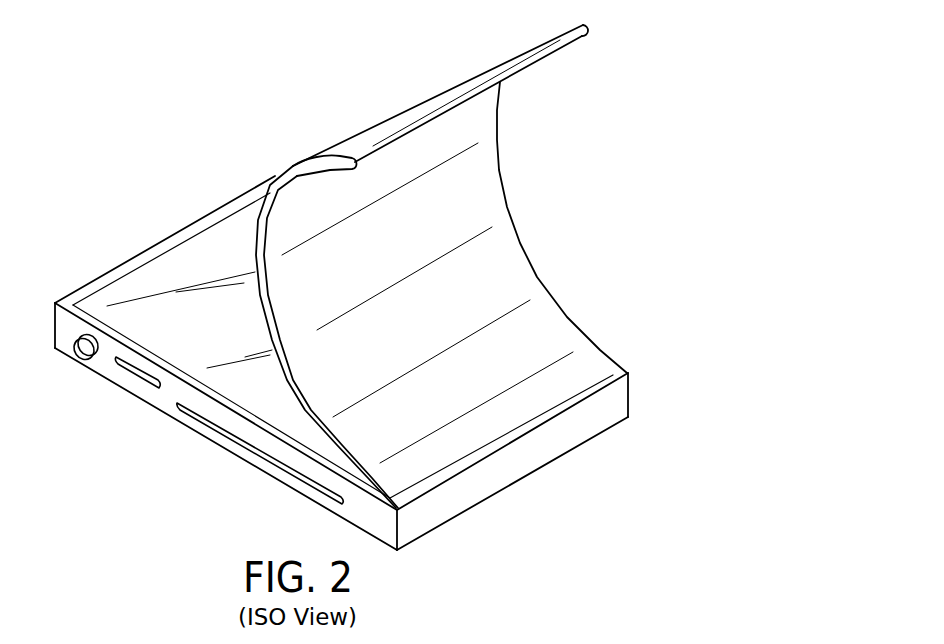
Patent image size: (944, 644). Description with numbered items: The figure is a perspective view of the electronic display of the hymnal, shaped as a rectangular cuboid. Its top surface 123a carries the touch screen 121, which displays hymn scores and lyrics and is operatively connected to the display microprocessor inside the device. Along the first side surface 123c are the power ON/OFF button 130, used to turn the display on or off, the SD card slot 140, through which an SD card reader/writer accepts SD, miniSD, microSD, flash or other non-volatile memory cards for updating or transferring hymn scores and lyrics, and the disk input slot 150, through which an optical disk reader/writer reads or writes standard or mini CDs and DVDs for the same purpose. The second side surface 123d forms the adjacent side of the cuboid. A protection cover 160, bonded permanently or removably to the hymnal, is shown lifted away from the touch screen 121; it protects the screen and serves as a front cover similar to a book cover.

The touch screen 121 is at (215, 247).
The top surface 123a is at (140, 258).
The first side surface 123c is at (370, 515).
The second side surface 123d is at (522, 467).
The power ON/OFF button 130 is at (77, 358).
The SD card slot 140 is at (128, 370).
The disk input slot 150 is at (200, 420).
The protection cover 160 is at (520, 242).